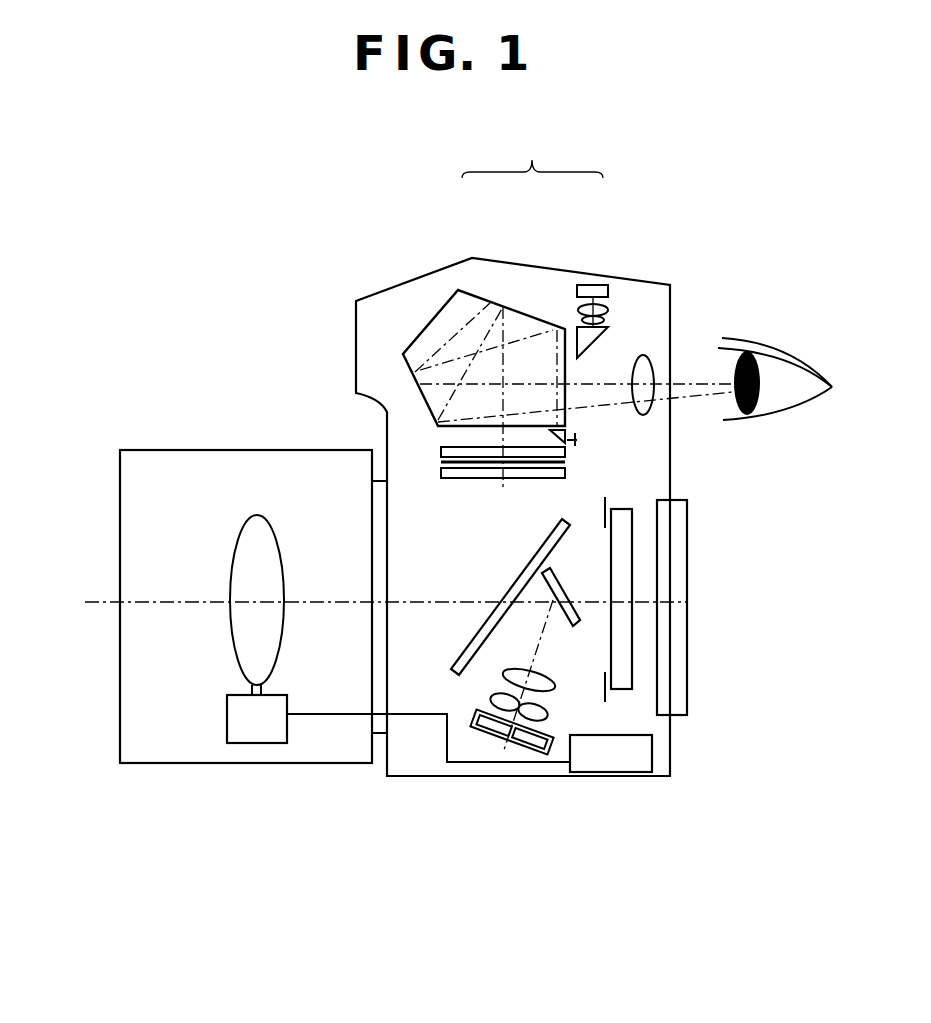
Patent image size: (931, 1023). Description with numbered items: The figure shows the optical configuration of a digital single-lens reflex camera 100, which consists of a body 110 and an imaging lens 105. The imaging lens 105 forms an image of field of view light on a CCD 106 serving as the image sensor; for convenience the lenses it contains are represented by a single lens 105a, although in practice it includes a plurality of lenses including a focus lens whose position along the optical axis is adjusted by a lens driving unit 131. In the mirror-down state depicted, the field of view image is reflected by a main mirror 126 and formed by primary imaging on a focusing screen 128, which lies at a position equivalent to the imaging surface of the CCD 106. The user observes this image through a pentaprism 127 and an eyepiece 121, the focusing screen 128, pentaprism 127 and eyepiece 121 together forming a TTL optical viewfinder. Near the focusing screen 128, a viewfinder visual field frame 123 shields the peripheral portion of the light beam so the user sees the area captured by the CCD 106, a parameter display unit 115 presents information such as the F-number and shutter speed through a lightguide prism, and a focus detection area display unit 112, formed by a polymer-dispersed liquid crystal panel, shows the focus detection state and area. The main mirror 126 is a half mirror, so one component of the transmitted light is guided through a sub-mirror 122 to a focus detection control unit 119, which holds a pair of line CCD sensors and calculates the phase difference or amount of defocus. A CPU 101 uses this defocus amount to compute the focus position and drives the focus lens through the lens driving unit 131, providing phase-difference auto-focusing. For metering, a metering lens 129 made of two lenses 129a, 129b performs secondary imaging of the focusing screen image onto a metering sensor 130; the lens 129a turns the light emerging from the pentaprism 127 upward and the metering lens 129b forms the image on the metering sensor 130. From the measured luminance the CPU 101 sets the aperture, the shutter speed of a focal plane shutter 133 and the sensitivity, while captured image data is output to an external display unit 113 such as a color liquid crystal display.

The digital single-lens reflex camera 100 is at (393, 888).
The CPU 101 is at (628, 773).
The imaging lens 105 is at (184, 450).
The lens 105a is at (233, 553).
The CCD 106 is at (632, 660).
The body 110 is at (483, 777).
The focus detection area display unit 112 is at (567, 450).
The external display unit 113 is at (688, 612).
The parameter display unit 115 is at (567, 437).
The focus detection control unit 119 is at (537, 754).
The eyepiece 121 is at (645, 356).
The sub-mirror 122 is at (547, 570).
The viewfinder visual field frame 123 is at (567, 462).
The main mirror 126 is at (457, 676).
The pentaprism 127 is at (438, 318).
The focusing screen 128 is at (567, 472).
The metering lens 129 is at (568, 306).
The lens 129a is at (566, 330).
The metering lens 129b is at (578, 328).
The metering sensor 130 is at (605, 286).
The lens driving unit 131 is at (253, 744).
The focal plane shutter 133 is at (605, 698).